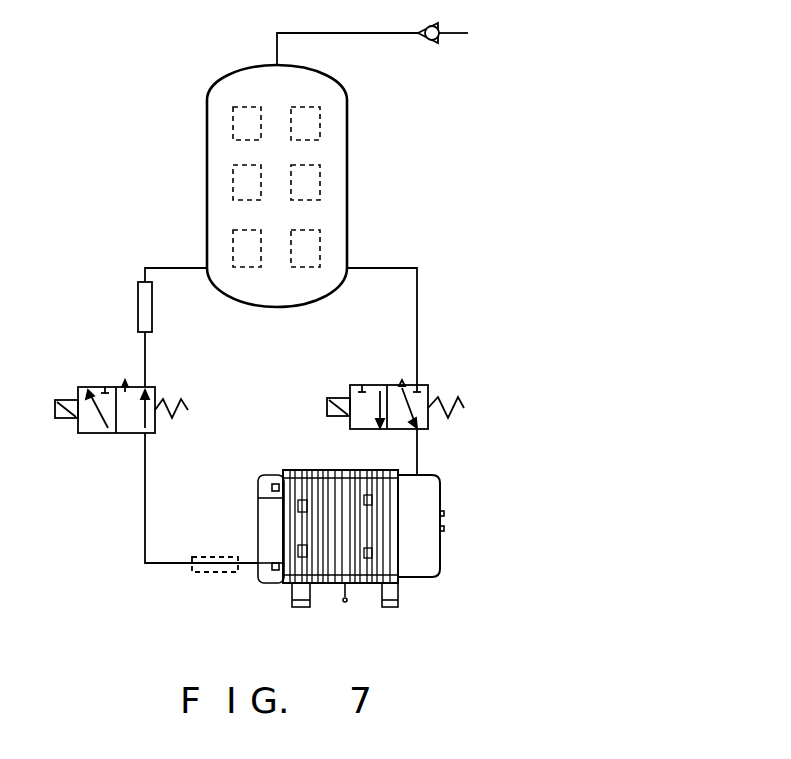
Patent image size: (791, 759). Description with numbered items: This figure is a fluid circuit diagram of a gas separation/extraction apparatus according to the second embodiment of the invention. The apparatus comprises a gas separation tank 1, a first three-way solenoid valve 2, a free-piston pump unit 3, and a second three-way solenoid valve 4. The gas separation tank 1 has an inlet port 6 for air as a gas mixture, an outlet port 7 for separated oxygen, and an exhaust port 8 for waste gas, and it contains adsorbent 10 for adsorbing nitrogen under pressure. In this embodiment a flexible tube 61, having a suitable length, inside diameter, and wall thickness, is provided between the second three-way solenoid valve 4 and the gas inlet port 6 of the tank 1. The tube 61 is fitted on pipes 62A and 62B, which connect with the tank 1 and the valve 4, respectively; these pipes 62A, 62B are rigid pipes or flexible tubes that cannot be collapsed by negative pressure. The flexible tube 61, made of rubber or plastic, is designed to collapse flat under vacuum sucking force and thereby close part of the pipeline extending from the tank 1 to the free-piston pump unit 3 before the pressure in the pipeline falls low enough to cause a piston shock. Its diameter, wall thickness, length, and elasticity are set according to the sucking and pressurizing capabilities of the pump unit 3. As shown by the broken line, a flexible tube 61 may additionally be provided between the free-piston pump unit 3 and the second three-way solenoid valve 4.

The gas separation tank 1 is at (340, 153).
The adsorbent 10 is at (233, 107).
The outlet port 7 is at (281, 64).
The exhaust port 8 is at (347, 267).
The inlet port 6 is at (207, 266).
The pipe 62A is at (164, 268).
The pipe 62B is at (145, 360).
The flexible tube 61 is at (138, 300).
The second three-way solenoid valve 4 is at (103, 387).
The first three-way solenoid valve 2 is at (374, 385).
The free-piston pump unit 3 is at (425, 556).